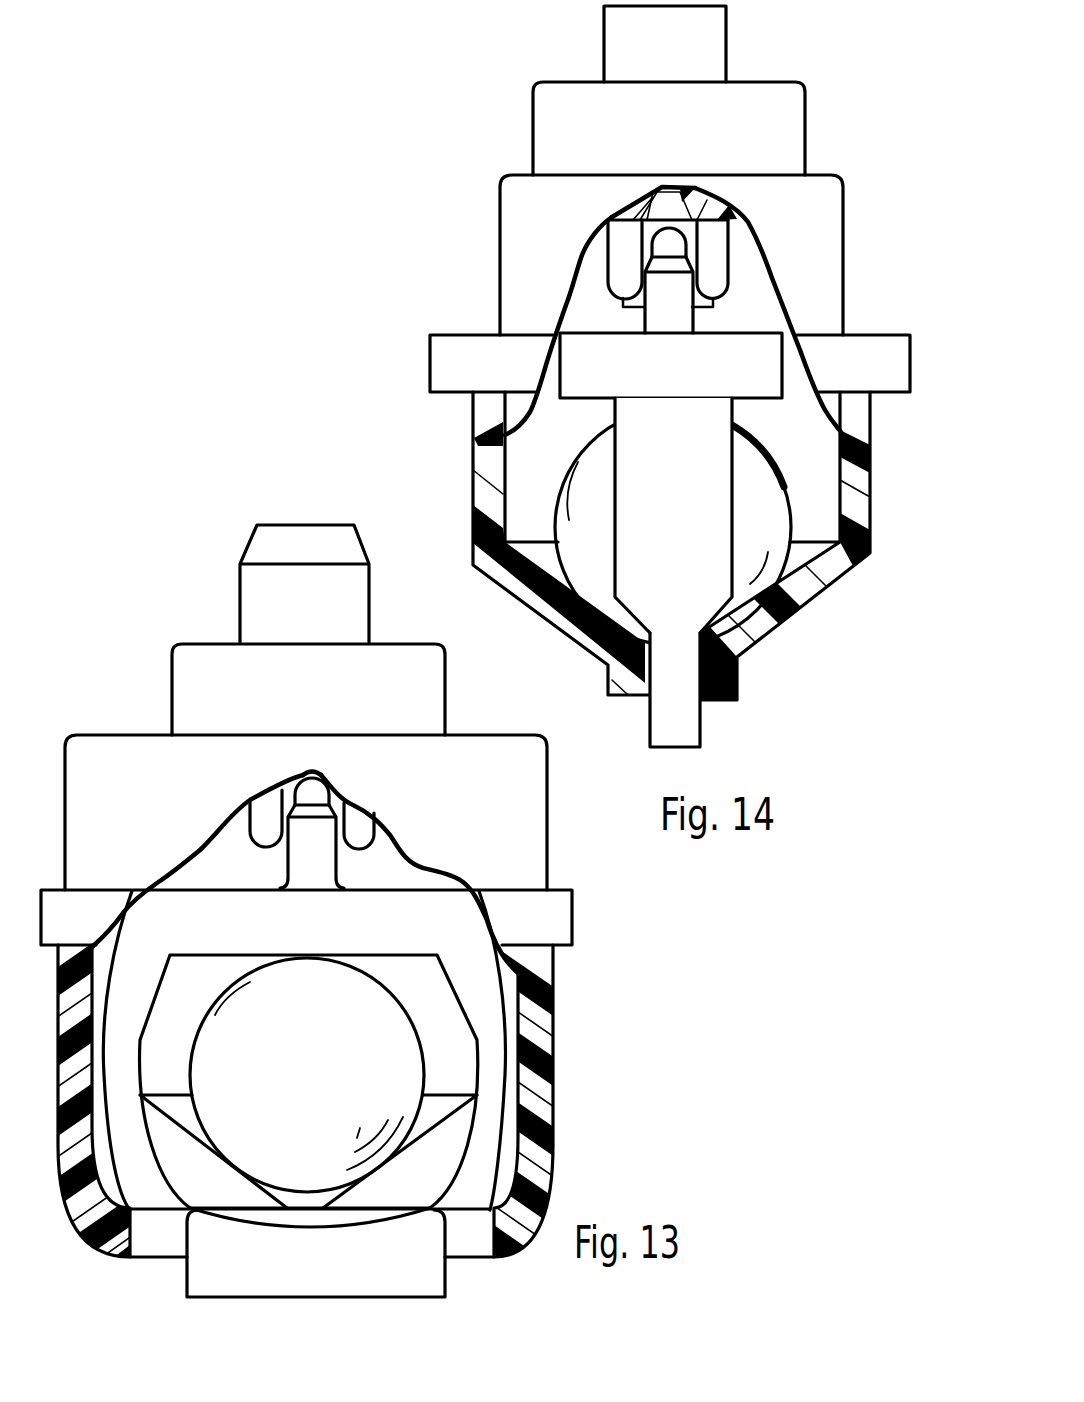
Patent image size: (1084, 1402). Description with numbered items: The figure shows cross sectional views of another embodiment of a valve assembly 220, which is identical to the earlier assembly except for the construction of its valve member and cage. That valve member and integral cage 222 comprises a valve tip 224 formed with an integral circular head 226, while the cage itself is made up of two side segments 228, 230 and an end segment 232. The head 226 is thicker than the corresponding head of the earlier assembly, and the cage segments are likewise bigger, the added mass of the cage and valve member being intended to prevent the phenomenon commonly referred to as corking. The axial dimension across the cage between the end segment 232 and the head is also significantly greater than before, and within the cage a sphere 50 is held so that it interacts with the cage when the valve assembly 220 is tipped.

In FIG. 14, the sphere 50 is at (780, 441).
In FIG. 13, the sphere 50 is at (373, 1034).
In FIG. 14, the valve assembly 220 is at (465, 493).
In FIG. 13, the valve assembly 220 is at (563, 1104).
In FIG. 14, the valve member and integral cage 222 is at (557, 333).
In FIG. 13, the valve member and integral cage 222 is at (489, 929).
In FIG. 14, the valve tip 224 is at (662, 245).
In FIG. 13, the valve tip 224 is at (318, 781).
In FIG. 14, the integral circular head 226 is at (752, 350).
In FIG. 13, the integral circular head 226 is at (382, 917).
In FIG. 13, the side segment 228 is at (134, 1140).
In FIG. 14, the side segment 230 is at (687, 530).
In FIG. 13, the side segment 230 is at (490, 1040).
In FIG. 14, the end segment 232 is at (677, 718).
In FIG. 13, the end segment 232 is at (413, 1273).